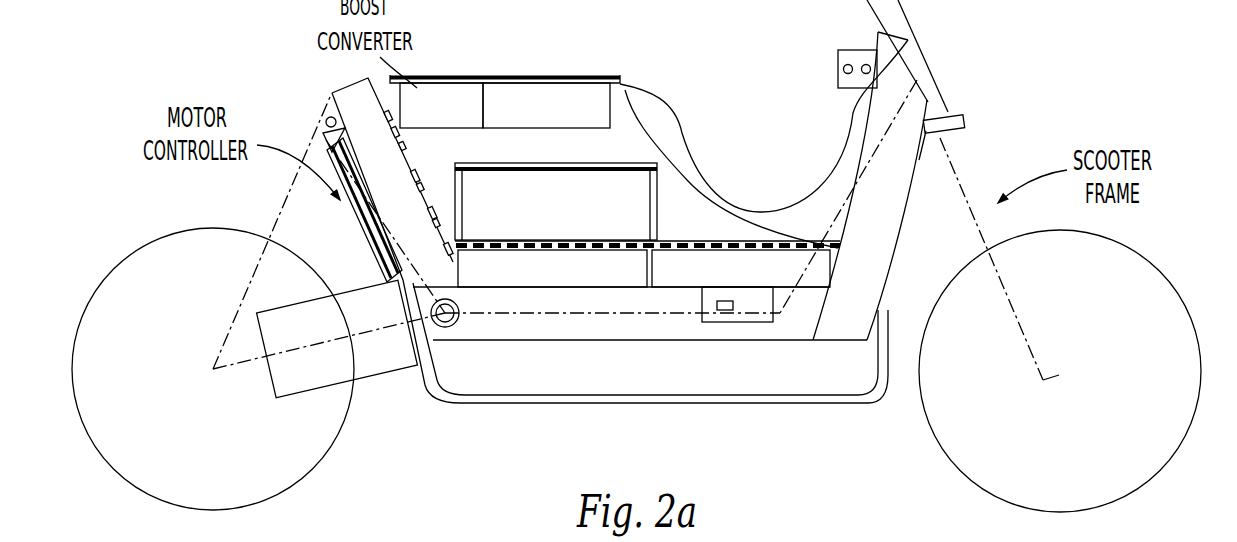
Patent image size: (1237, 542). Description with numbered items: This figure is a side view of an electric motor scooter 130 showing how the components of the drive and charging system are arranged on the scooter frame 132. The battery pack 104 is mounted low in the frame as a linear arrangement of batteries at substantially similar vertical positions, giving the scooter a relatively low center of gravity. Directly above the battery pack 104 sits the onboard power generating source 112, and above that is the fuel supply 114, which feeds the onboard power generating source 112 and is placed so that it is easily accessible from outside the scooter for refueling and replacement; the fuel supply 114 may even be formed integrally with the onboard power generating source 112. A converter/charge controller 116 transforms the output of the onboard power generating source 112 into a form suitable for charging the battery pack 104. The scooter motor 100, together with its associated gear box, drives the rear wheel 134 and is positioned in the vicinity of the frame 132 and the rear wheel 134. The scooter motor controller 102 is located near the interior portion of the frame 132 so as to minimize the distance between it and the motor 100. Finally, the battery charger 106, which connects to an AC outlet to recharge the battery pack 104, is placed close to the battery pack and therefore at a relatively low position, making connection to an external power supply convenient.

The scooter motor 100 is at (367, 287).
The scooter motor controller 102 is at (327, 150).
The battery pack 104 is at (677, 260).
The battery charger 106 is at (750, 322).
The onboard power generating source 112 is at (628, 162).
The fuel supply 114 is at (572, 88).
The converter/charge controller 116 is at (452, 90).
The motor scooter 130 is at (1009, 55).
The scooter frame 132 is at (920, 160).
The rear wheel 134 is at (82, 313).